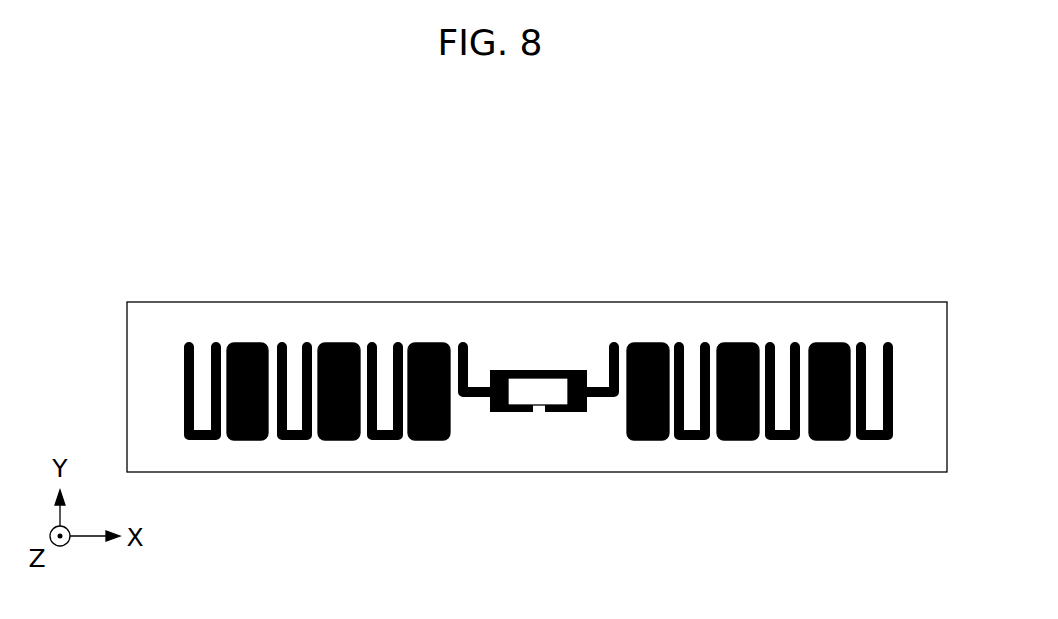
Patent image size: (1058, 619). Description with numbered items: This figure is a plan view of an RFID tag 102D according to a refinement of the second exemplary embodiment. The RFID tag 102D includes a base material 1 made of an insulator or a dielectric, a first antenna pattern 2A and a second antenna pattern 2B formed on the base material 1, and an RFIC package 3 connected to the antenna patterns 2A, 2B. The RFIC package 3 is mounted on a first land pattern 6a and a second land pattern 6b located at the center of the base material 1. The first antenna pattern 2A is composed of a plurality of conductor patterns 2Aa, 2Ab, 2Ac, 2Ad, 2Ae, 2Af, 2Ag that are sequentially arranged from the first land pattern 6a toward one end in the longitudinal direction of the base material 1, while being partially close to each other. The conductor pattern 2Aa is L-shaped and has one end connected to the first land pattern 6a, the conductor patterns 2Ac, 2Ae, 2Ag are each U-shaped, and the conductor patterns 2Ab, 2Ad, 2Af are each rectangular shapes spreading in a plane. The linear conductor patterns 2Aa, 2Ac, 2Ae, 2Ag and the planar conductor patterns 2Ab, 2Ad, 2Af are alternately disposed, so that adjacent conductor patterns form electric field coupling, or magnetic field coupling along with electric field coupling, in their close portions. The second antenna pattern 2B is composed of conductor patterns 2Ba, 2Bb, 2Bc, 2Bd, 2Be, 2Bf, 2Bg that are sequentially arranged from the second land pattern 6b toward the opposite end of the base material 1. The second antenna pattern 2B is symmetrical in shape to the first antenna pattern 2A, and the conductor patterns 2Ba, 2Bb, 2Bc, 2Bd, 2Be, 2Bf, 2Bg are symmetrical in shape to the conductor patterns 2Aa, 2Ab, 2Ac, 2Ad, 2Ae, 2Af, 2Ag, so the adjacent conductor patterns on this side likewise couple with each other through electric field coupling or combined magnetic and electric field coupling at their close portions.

The RFID tag 102D is at (603, 142).
The base material 1 is at (556, 301).
The first antenna pattern 2A is at (463, 252).
The second antenna pattern 2B is at (609, 252).
The conductor pattern 2Aa is at (471, 398).
The conductor pattern 2Ab is at (430, 342).
The conductor pattern 2Ac is at (384, 441).
The conductor pattern 2Ad is at (339, 342).
The conductor pattern 2Ae is at (293, 441).
The conductor pattern 2Af is at (247, 342).
The conductor pattern 2Ag is at (203, 441).
The conductor pattern 2Ba is at (609, 398).
The conductor pattern 2Bb is at (652, 342).
The conductor pattern 2Bc is at (692, 441).
The conductor pattern 2Bd is at (743, 342).
The conductor pattern 2Be is at (783, 441).
The conductor pattern 2Bf is at (834, 342).
The conductor pattern 2Bg is at (875, 441).
The RFIC package 3 is at (539, 385).
The first land pattern 6a is at (497, 370).
The second land pattern 6b is at (580, 370).